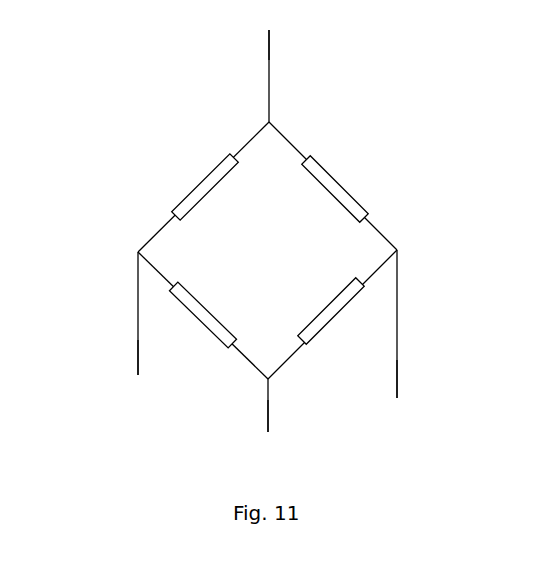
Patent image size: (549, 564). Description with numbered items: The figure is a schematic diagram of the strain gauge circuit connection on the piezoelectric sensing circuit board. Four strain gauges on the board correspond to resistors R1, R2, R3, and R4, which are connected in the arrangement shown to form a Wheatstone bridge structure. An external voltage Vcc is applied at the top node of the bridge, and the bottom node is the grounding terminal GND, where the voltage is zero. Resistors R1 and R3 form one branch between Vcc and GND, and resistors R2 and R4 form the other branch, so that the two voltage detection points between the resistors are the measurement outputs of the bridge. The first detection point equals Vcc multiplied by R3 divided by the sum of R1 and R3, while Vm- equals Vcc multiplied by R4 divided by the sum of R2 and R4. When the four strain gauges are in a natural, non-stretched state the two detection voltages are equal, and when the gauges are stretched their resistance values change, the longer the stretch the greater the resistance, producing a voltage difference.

The resistor R1 is at (194, 182).
The resistor R2 is at (348, 187).
The resistor R3 is at (202, 323).
The resistor R4 is at (337, 315).
The external voltage Vcc is at (294, 39).
The grounding terminal GND is at (268, 432).
The voltage detection point Vm- is at (423, 381).